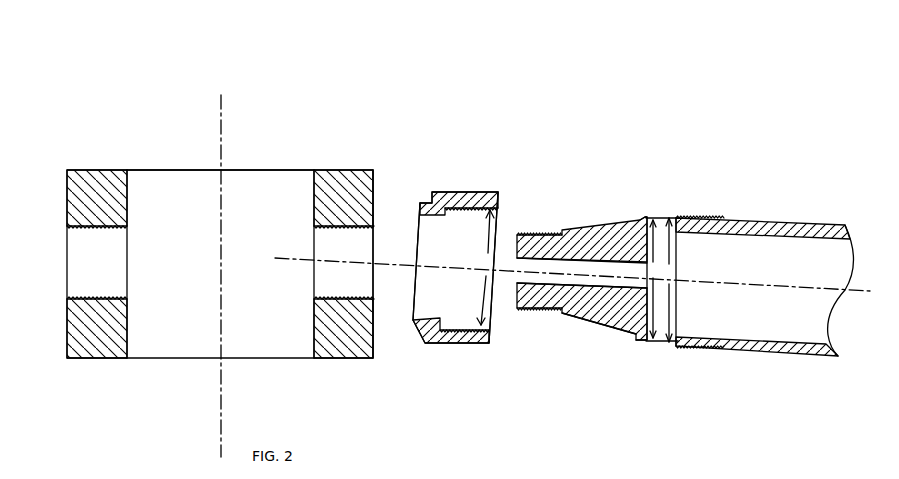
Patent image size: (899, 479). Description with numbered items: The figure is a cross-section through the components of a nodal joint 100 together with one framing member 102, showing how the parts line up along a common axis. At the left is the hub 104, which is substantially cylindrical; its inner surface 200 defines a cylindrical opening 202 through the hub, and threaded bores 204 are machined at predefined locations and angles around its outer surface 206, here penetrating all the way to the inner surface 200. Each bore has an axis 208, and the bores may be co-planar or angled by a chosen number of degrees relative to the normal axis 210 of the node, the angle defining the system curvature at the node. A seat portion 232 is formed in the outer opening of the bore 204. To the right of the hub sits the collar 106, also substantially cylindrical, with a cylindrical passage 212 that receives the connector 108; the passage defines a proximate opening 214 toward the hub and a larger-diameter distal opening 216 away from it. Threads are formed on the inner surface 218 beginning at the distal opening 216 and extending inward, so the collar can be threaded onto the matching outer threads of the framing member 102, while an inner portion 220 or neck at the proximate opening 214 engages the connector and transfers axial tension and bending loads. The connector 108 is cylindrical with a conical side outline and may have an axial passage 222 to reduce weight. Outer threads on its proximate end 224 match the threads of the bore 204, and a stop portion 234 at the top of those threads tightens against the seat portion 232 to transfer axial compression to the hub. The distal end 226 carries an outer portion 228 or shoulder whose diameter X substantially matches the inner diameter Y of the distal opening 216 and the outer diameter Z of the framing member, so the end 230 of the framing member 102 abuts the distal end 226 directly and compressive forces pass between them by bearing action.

The nodal joint 100 is at (566, 45).
The framing member 102 is at (765, 284).
The hub 104 is at (225, 246).
The collar 106 is at (467, 262).
The connector 108 is at (590, 290).
The inner surface 200 is at (314, 194).
The cylindrical opening 202 is at (187, 230).
The bore 204 is at (359, 254).
The outer surface 206 is at (375, 188).
The axis 208 is at (392, 268).
The normal axis 210 is at (219, 122).
The cylindrical passage 212 is at (472, 242).
The proximate opening 214 is at (420, 240).
The distal opening 216 is at (500, 215).
The inner surface 218 is at (445, 323).
The inner portion 220 is at (428, 323).
The axial passage 222 is at (597, 281).
The proximate end 224 is at (518, 300).
The distal end 226 is at (650, 340).
The outer portion 228 is at (638, 333).
The end 230 is at (698, 345).
The seat portion 232 is at (72, 300).
The stop portion 234 is at (557, 313).